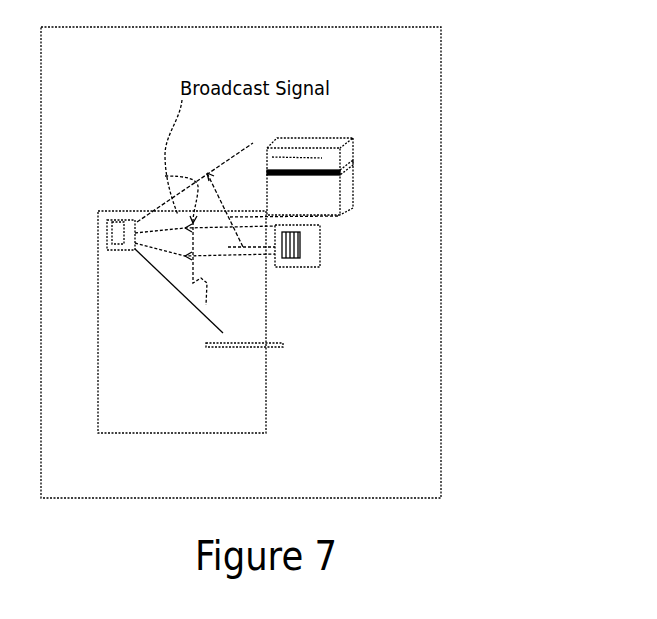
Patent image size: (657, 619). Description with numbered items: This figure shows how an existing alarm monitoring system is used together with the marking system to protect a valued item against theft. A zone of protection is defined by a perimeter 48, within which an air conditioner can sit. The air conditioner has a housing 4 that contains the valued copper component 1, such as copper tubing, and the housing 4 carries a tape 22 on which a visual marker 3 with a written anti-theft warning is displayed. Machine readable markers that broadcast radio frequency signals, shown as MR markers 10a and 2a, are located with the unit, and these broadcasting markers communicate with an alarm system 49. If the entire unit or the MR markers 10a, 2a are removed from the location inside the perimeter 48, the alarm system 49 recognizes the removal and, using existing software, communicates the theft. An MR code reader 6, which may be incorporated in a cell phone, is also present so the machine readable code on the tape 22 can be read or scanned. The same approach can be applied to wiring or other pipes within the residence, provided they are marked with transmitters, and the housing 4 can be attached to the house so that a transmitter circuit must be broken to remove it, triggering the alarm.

The perimeter 48 is at (441, 88).
The valued item 1 is at (218, 205).
The MR code reader 6 is at (118, 233).
The alarm system 49 is at (125, 232).
The MR marker 2a is at (285, 215).
The housing 4 is at (353, 184).
The visual marker 3 is at (272, 157).
The tape 22 is at (353, 165).
The MR marker 10a is at (340, 213).